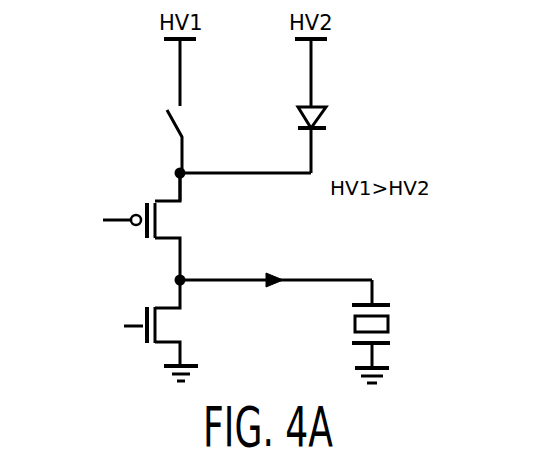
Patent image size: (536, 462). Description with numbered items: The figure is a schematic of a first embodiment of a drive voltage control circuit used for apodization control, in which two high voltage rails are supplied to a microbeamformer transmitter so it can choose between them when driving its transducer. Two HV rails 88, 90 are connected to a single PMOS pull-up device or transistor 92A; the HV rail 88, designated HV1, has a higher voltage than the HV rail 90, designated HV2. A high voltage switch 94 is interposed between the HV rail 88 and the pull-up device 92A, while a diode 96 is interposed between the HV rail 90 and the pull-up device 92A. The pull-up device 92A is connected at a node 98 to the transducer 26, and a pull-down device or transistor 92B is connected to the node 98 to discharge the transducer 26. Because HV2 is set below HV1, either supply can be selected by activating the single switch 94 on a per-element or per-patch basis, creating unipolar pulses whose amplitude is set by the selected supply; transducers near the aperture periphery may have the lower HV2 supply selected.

The HV rail 88 is at (177, 62).
The HV rail 90 is at (314, 56).
The high voltage switch 94 is at (172, 125).
The diode 96 is at (328, 115).
The pull-up device 92A is at (143, 238).
The pull-down device 92B is at (146, 338).
The node 98 is at (186, 284).
The transducer 26 is at (389, 324).